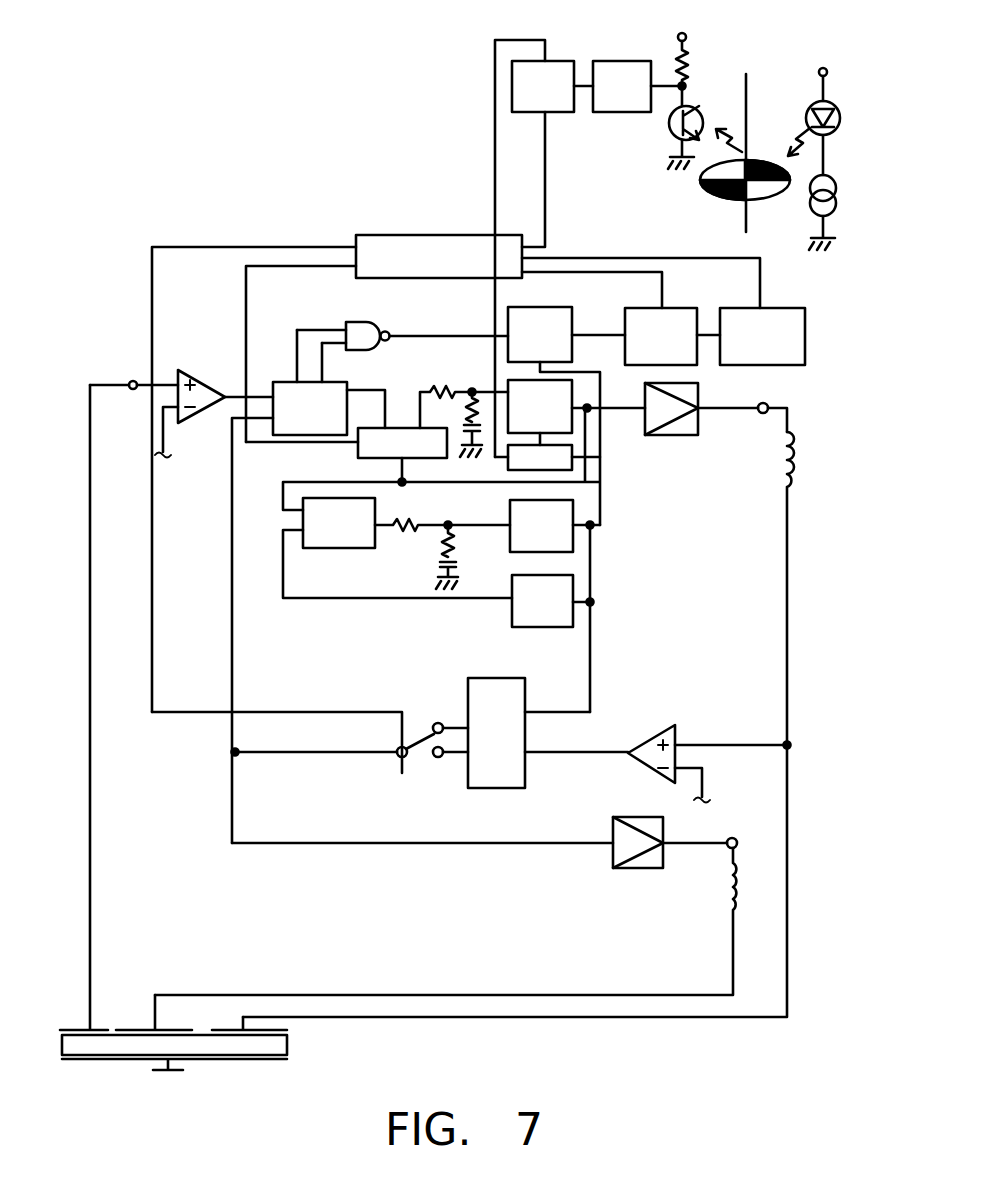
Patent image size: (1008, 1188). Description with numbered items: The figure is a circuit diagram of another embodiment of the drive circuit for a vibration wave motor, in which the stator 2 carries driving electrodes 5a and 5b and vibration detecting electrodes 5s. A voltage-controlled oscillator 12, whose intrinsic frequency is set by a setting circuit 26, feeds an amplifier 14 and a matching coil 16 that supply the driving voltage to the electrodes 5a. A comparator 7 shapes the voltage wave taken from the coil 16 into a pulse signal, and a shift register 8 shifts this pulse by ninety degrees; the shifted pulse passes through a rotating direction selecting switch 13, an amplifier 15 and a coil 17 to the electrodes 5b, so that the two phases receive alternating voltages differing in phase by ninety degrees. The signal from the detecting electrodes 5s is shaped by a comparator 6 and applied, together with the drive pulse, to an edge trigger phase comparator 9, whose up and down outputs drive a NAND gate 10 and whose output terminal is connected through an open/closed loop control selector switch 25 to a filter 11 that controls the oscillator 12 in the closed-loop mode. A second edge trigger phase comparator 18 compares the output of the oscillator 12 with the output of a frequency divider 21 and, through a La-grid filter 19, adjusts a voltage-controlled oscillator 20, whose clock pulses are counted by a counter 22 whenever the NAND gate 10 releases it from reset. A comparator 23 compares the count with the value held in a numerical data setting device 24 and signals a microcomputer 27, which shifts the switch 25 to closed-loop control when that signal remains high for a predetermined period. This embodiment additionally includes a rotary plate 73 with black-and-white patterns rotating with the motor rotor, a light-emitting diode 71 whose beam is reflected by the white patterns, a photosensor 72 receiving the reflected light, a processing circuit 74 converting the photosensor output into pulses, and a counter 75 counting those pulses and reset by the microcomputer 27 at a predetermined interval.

The stator 2 is at (280, 1045).
The vibration detecting electrodes 5s is at (84, 1029).
The driving electrodes 5a is at (146, 1029).
The driving electrodes 5b is at (230, 1029).
The comparator 6 is at (200, 382).
The comparator 7 is at (655, 740).
The shift register 8 is at (548, 713).
The edge trigger phase comparator 9 is at (284, 383).
The NAND gate 10 is at (368, 323).
The filter 11 is at (444, 388).
The voltage-controlled oscillator 12 is at (568, 397).
The rotating direction selecting switch 13 is at (424, 765).
The amplifier 14 is at (690, 396).
The amplifier 15 is at (640, 868).
The matching coil 16 is at (800, 458).
The coil 17 is at (745, 876).
The edge trigger phase comparator 18 is at (343, 549).
The La-grid filter 19 is at (414, 525).
The voltage-controlled oscillator 20 is at (513, 511).
The frequency divider 21 is at (512, 614).
The counter 22 is at (568, 318).
The comparator 23 is at (681, 318).
The numerical data setting device 24 is at (791, 318).
The open/closed loop control selector switch 25 is at (357, 452).
The setting circuit 26 is at (600, 457).
The microcomputer 27 is at (437, 236).
The light-emitting diode 71 is at (835, 118).
The photosensor 72 is at (700, 121).
The rotary plate 73 is at (715, 198).
The processing circuit 74 is at (620, 62).
The counter 75 is at (556, 62).